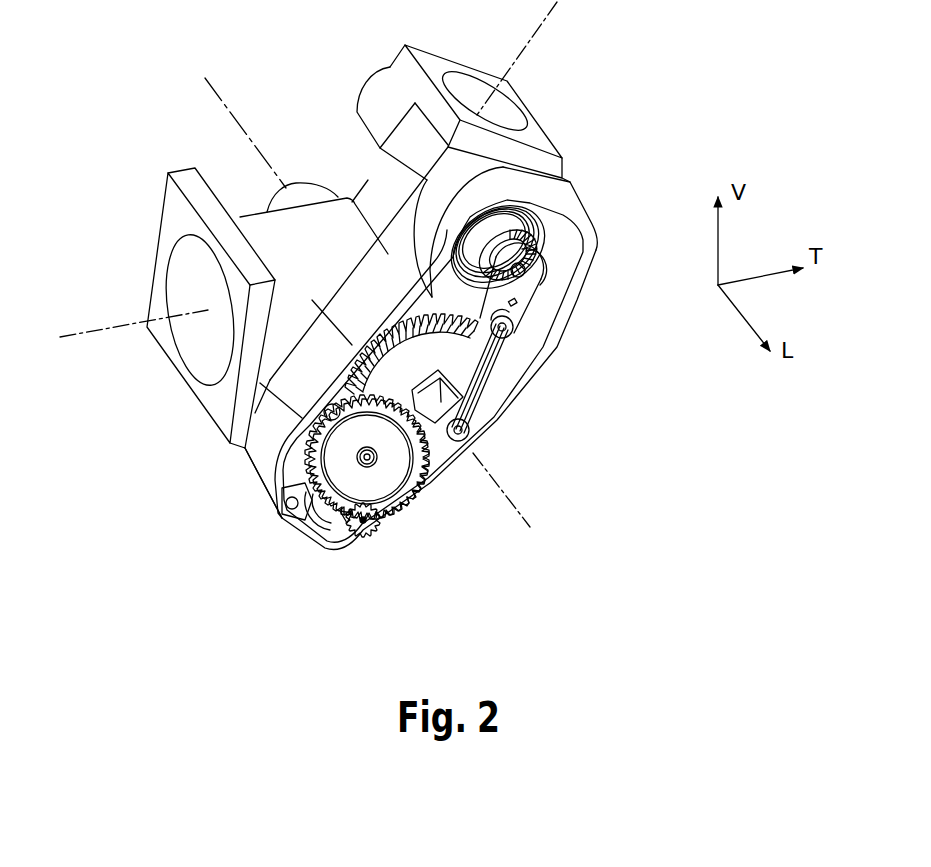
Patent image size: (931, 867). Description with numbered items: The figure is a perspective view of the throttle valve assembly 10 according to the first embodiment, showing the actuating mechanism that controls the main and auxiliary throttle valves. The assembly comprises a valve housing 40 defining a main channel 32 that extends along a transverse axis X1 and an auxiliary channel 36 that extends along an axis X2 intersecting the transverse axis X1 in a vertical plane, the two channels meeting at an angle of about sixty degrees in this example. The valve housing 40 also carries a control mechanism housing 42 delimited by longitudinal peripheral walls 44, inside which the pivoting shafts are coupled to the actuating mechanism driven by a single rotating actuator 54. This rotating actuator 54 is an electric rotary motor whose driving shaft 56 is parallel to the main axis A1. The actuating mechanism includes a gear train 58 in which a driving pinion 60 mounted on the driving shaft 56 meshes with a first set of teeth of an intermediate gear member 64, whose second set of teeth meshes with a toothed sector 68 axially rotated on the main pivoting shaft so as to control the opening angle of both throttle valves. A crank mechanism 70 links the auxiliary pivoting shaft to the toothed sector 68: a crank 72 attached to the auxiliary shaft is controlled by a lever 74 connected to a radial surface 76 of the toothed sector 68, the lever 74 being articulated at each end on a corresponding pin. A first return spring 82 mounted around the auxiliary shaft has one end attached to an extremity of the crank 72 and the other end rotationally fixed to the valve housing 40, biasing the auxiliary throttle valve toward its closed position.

The throttle valve assembly 10 is at (300, 87).
The main channel 32 is at (192, 373).
The auxiliary channel 36 is at (534, 113).
The valve housing 40 is at (240, 214).
The control mechanism housing 42 is at (238, 472).
The longitudinal peripheral walls 44 is at (265, 487).
The rotating actuator 54 is at (337, 534).
The driving shaft 56 is at (370, 524).
The gear train 58 is at (386, 472).
The driving pinion 60 is at (352, 529).
The intermediate gear member 64 is at (430, 482).
The toothed sector 68 is at (402, 236).
The crank mechanism 70 is at (546, 344).
The crank 72 is at (542, 289).
The lever 74 is at (485, 403).
The radial surface 76 is at (453, 347).
The first return spring 82 is at (557, 243).
The transverse axis X1 is at (63, 337).
The auxiliary channel axis X2 is at (557, 3).
The main axis A1 is at (533, 528).